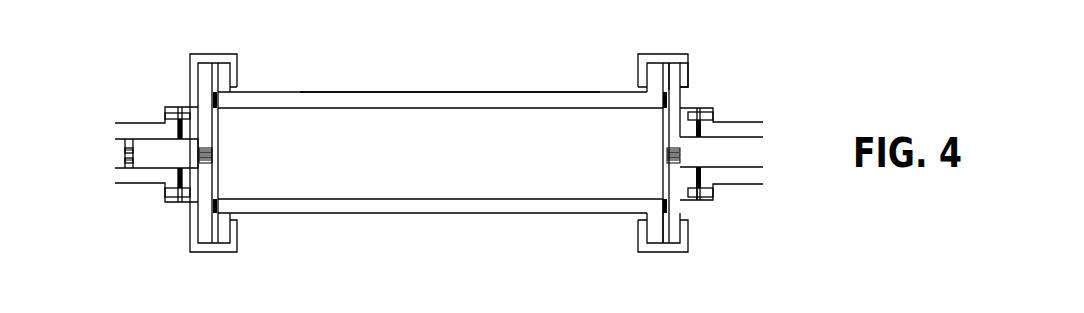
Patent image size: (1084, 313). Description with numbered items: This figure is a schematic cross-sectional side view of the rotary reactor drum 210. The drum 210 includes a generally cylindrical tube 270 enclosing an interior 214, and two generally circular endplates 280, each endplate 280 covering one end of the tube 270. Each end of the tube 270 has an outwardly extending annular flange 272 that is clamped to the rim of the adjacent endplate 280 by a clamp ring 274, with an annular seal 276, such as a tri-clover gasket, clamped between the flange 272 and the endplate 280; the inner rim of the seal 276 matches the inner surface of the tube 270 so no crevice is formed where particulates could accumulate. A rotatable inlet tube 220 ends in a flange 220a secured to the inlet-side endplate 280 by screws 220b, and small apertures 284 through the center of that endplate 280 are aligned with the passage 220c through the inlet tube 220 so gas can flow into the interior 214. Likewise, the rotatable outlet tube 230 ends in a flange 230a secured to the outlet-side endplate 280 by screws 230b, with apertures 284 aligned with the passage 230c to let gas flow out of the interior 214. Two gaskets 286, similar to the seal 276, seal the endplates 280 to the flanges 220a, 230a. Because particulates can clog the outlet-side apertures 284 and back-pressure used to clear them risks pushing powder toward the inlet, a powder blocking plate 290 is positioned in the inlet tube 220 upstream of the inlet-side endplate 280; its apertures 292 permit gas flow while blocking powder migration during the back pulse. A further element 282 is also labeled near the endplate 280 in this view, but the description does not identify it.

The rotary reactor drum 210 is at (439, 64).
The interior 214 is at (440, 162).
The rotatable inlet tube 220 is at (143, 177).
The flange 220a is at (172, 205).
The screws 220b is at (177, 108).
The passage 220c is at (150, 152).
The rotatable outlet tube 230 is at (750, 173).
The flange 230a is at (700, 108).
The screws 230b is at (703, 197).
The passage 230c is at (730, 160).
The cylindrical tube 270 is at (560, 90).
The annular flange 272 is at (222, 80).
The clamp ring 274 is at (685, 70).
The annular seal 276 is at (663, 210).
The endplate 280 is at (680, 123).
The upper bolt 282 is at (672, 72).
The small apertures 284 is at (213, 152).
The gaskets 286 is at (697, 178).
The powder blocking plate 290 is at (125, 147).
The apertures 292 is at (125, 162).